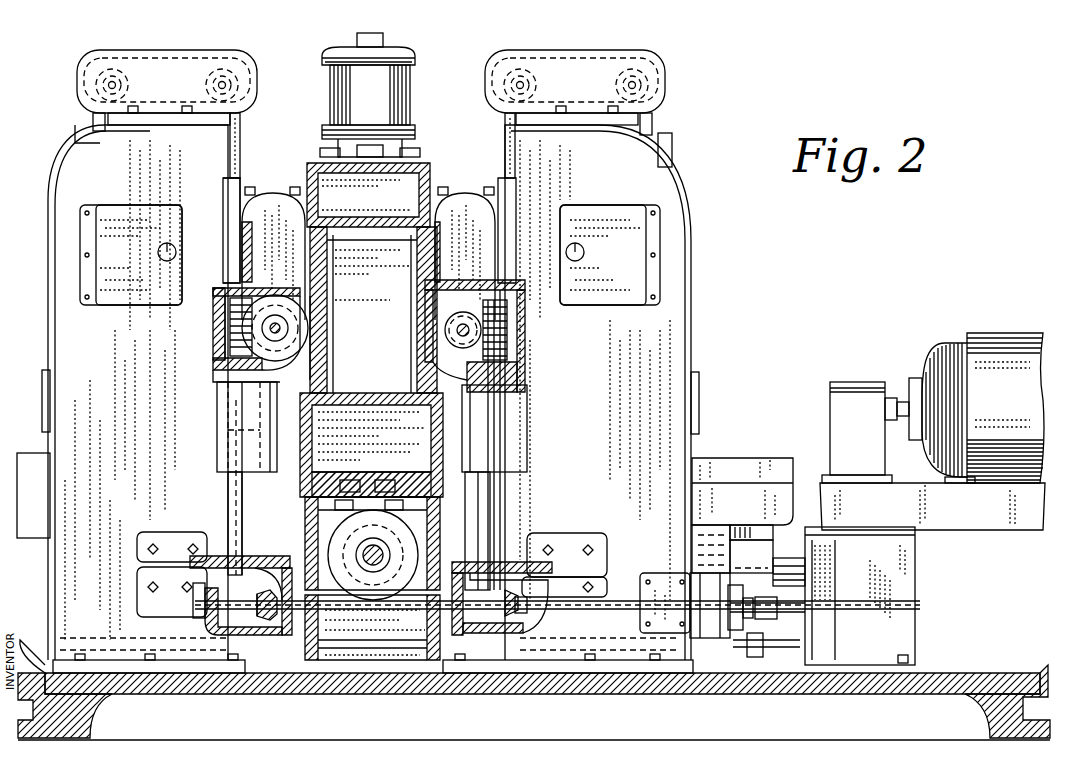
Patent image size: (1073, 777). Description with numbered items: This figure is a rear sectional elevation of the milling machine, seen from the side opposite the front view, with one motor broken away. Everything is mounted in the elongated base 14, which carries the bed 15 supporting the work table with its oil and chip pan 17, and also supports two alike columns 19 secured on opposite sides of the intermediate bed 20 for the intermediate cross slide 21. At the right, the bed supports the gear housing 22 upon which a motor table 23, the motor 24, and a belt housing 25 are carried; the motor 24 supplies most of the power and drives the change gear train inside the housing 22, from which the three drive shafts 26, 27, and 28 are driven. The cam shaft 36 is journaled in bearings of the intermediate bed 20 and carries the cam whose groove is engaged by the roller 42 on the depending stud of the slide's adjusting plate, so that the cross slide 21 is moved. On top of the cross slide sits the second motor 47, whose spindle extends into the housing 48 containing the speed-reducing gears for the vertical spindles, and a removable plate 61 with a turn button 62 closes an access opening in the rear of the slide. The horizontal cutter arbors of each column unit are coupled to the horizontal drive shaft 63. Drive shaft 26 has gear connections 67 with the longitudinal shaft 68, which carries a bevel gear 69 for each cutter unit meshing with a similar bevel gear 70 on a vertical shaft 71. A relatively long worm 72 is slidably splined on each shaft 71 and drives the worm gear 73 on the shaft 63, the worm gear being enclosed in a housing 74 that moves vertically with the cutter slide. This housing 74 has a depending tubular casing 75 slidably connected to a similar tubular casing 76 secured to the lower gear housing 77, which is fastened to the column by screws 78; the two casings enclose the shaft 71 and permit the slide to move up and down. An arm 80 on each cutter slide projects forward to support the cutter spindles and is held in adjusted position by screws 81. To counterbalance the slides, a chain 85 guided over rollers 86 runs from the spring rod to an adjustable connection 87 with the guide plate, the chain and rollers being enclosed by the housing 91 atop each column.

The base 14 is at (40, 650).
The bed 15 is at (712, 555).
The oil and chip pan 17 is at (735, 490).
The column 19 is at (115, 404).
The intermediate bed 20 is at (322, 520).
The intermediate cross slide 21 is at (373, 310).
The gear housing 22 is at (828, 575).
The motor table 23 is at (932, 506).
The motor 24 is at (983, 408).
The belt housing 25 is at (872, 430).
The drive shaft 26 is at (775, 655).
The drive shaft 27 is at (810, 600).
The drive shaft 28 is at (757, 572).
The cam shaft 36 is at (373, 548).
The roller 42 is at (388, 490).
The second motor 47 is at (370, 95).
The housing 48 is at (368, 195).
The removable plate 61 is at (370, 255).
The turn button 62 is at (597, 244).
The horizontal drive shaft 63 is at (460, 334).
The gear connections 67 is at (688, 575).
The longitudinal shaft 68 is at (430, 612).
The bevel gear 69 is at (376, 610).
The bevel gear 70 is at (262, 578).
The vertical shaft 71 is at (230, 458).
The worm 72 is at (232, 308).
The worm gear 73 is at (455, 322).
The housing 74 is at (448, 308).
The tubular casing 75 is at (246, 427).
The tubular casing 76 is at (240, 497).
The lower gear housing 77 is at (258, 636).
The screws 78 is at (193, 543).
The arm 80 is at (368, 256).
The screws 81 is at (296, 190).
The chain 85 is at (92, 120).
The rollers 86 is at (96, 70).
The adjustable connection 87 is at (240, 203).
The housing 91 is at (168, 52).